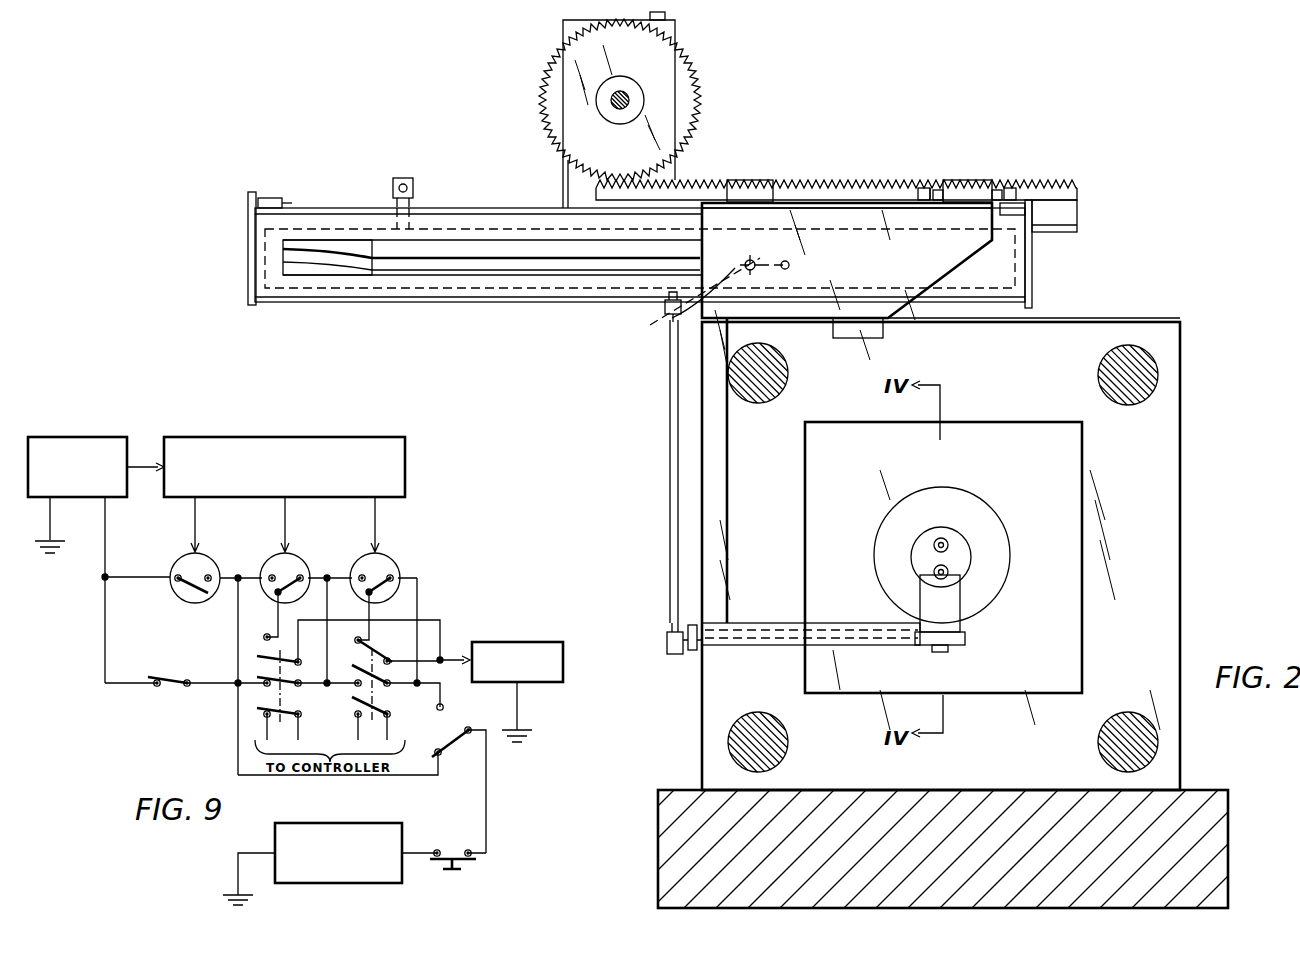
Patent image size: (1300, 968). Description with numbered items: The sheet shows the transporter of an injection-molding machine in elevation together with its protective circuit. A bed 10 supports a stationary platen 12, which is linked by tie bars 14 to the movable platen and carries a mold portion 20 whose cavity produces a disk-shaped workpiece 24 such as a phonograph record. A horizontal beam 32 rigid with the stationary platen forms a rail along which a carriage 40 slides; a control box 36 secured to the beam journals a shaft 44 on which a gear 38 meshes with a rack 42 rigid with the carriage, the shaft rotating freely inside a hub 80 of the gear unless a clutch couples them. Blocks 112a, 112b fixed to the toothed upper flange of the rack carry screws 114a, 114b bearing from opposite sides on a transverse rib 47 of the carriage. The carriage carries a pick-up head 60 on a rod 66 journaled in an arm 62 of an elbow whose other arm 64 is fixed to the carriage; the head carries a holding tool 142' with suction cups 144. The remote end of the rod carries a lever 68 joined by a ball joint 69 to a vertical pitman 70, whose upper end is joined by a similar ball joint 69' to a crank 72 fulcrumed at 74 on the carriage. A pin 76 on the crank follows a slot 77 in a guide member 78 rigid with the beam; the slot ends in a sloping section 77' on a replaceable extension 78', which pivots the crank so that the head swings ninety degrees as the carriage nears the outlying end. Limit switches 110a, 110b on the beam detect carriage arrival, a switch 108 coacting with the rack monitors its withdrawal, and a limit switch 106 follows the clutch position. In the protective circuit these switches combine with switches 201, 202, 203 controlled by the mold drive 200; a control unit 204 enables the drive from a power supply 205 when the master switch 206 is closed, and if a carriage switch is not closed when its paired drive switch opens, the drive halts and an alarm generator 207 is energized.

In FIG. 2, the bed 10 is at (1222, 846).
In FIG. 2, the stationary platen 12 is at (1177, 546).
In FIG. 2, the tie bars 14 is at (760, 398).
In FIG. 2, the mold portion 20 is at (1083, 494).
In FIG. 2, the disk-shaped workpiece 24 is at (965, 495).
In FIG. 2, the horizontal beam 32 is at (1040, 260).
In FIG. 2, the control box 36 is at (677, 28).
In FIG. 2, the gear 38 is at (552, 93).
In FIG. 2, the carriage 40 is at (935, 316).
In FIG. 2, the rack 42 is at (795, 180).
In FIG. 2, the shaft 44 is at (630, 99).
In FIG. 2, the transverse rib 47 is at (970, 178).
In FIG. 2, the pick-up head 60 is at (955, 605).
In FIG. 2, the arm 62 is at (765, 630).
In FIG. 2, the arm 64 is at (729, 507).
In FIG. 2, the rod 66 is at (768, 648).
In FIG. 2, the lever 68 is at (692, 652).
In FIG. 2, the ball joint 69 is at (650, 647).
In FIG. 2, the ball joint 69' is at (650, 327).
In FIG. 2, the pitman 70 is at (674, 466).
In FIG. 2, the crank 72 is at (680, 328).
In FIG. 2, the fulcrum 74 is at (789, 265).
In FIG. 2, the pin 76 is at (750, 270).
In FIG. 2, the slot 77 is at (536, 307).
In FIG. 2, the sloping section 77' is at (327, 302).
In FIG. 2, the guide member 78 is at (492, 222).
In FIG. 2, the extension 78' is at (327, 217).
In FIG. 2, the hub 80 is at (620, 78).
In FIG. 2, the limit switch 106 is at (650, 14).
In FIG. 9, the limit switch 106 is at (448, 740).
In FIG. 2, the switch 108 is at (403, 178).
In FIG. 9, the switch 108 is at (160, 675).
In FIG. 2, the limit switch 110a is at (270, 198).
In FIG. 9, the limit switch 110a is at (258, 656).
In FIG. 2, the limit switch 110b is at (1078, 212).
In FIG. 9, the limit switch 110b is at (370, 658).
In FIG. 2, the block 112a is at (922, 188).
In FIG. 2, the block 112b is at (1020, 182).
In FIG. 2, the screw 114a is at (938, 190).
In FIG. 2, the screw 114b is at (998, 188).
In FIG. 2, the holding tool 142' is at (918, 527).
In FIG. 2, the suction cups 144 is at (950, 572).
In FIG. 9, the mold drive 200 is at (262, 437).
In FIG. 9, the switch 201 is at (290, 558).
In FIG. 9, the switch 202 is at (380, 558).
In FIG. 9, the switch 203 is at (198, 558).
In FIG. 9, the control unit 204 is at (90, 437).
In FIG. 9, the power supply 205 is at (336, 823).
In FIG. 9, the master switch 206 is at (462, 866).
In FIG. 9, the alarm generator 207 is at (512, 642).